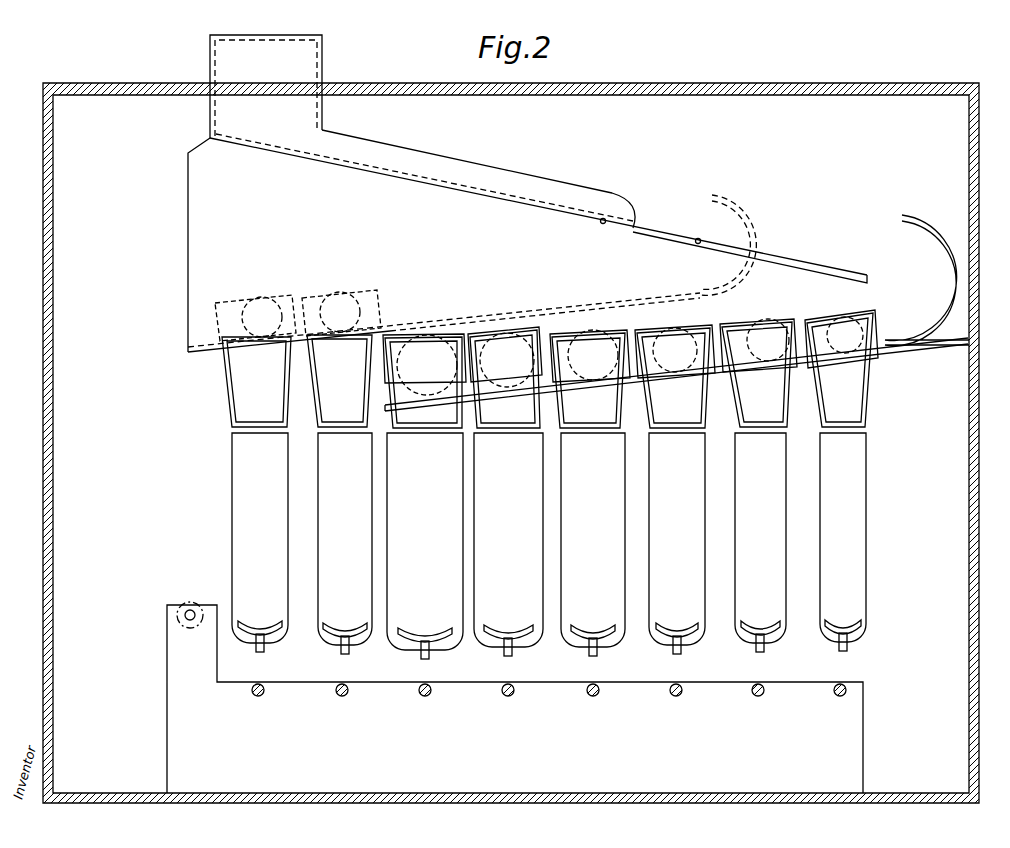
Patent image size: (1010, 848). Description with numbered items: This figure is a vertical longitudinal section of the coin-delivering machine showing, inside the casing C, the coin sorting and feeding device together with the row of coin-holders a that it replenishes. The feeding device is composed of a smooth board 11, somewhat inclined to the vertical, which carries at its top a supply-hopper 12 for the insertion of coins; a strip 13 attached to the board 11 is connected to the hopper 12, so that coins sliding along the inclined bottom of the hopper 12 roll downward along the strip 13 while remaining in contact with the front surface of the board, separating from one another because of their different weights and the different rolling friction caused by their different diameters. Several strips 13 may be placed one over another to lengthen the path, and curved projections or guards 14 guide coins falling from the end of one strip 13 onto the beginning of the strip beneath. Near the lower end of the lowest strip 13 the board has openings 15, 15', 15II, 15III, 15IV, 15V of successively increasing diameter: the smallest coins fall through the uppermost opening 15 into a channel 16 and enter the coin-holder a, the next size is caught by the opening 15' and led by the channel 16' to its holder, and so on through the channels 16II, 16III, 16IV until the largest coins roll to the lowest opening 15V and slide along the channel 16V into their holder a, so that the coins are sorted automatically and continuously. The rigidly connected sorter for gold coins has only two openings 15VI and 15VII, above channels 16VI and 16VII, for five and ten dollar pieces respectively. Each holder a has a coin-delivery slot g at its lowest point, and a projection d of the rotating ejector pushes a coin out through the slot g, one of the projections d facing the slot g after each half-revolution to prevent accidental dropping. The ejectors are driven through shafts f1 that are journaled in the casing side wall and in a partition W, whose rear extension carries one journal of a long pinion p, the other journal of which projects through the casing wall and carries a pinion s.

The smooth board 11 is at (444, 241).
The supply-hopper 12 is at (266, 86).
The strip 13 is at (843, 352).
The curved projection or guard 14 is at (940, 288).
The opening 15 is at (841, 329).
The opening 15' is at (758, 333).
The opening 15II is at (705, 332).
The opening 15III is at (620, 336).
The opening 15IV is at (515, 340).
The opening 15V is at (446, 332).
The opening 15VI is at (358, 292).
The opening 15VII is at (272, 298).
The channel 16 is at (840, 370).
The channel 16' is at (757, 374).
The channel 16II is at (673, 378).
The channel 16III is at (588, 380).
The channel 16IV is at (505, 379).
The channel 16V is at (423, 382).
The channel 16VI is at (339, 381).
The channel 16VII is at (256, 382).
The coin-holder a is at (549, 541).
The coin-delivery slot g is at (843, 628).
The projection d is at (839, 648).
The shaft f1 is at (818, 706).
The partition W is at (515, 699).
The long pinion p is at (188, 612).
The pinion s is at (197, 606).
The casing C is at (995, 385).